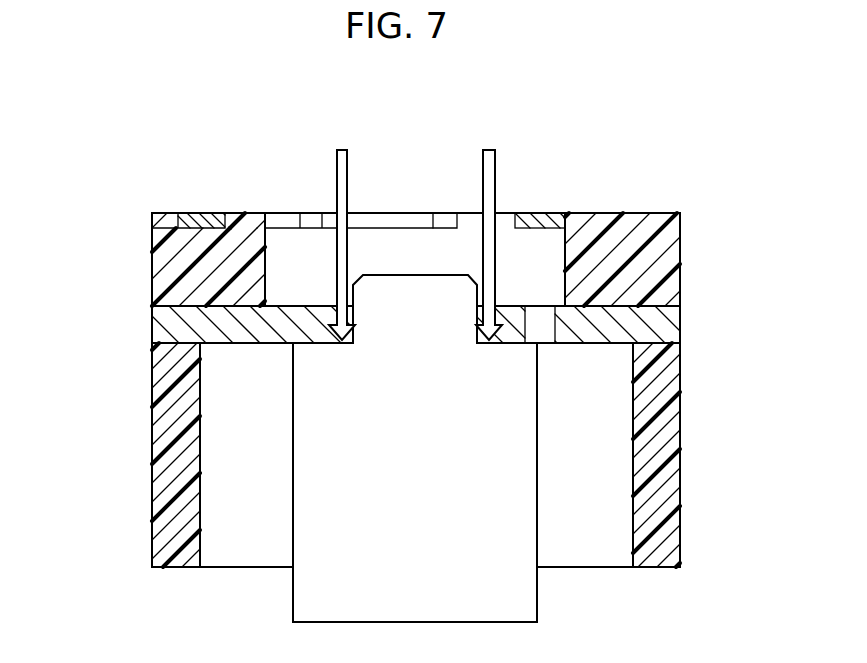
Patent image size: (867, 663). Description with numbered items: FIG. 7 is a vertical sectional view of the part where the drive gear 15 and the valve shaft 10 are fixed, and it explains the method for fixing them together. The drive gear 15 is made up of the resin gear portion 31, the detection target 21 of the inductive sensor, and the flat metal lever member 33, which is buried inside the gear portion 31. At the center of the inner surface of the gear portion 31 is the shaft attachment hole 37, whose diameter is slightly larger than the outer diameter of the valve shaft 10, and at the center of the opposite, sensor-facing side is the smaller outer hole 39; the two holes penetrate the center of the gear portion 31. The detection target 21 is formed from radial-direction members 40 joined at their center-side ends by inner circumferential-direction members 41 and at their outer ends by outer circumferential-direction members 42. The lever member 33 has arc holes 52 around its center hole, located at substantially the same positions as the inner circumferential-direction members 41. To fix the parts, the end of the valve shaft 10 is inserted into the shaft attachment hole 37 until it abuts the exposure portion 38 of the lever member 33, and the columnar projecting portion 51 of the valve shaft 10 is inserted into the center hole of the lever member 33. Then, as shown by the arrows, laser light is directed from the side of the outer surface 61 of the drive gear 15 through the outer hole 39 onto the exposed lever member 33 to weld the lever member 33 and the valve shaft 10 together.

The valve shaft 10 is at (508, 588).
The drive gear 15 is at (125, 211).
The detection target 21 is at (217, 210).
The gear portion 31 is at (170, 415).
The lever member 33 is at (175, 327).
The shaft attachment hole 37 is at (255, 540).
The exposure portion 38 is at (267, 345).
The outer hole 39 is at (509, 245).
The radial-direction member 40 is at (283, 211).
The inner circumferential-direction member 41 is at (372, 211).
The outer circumferential-direction member 42 is at (195, 211).
The projecting portion 51 is at (420, 275).
The arc hole 52 is at (547, 345).
The outer surface 61 is at (626, 211).